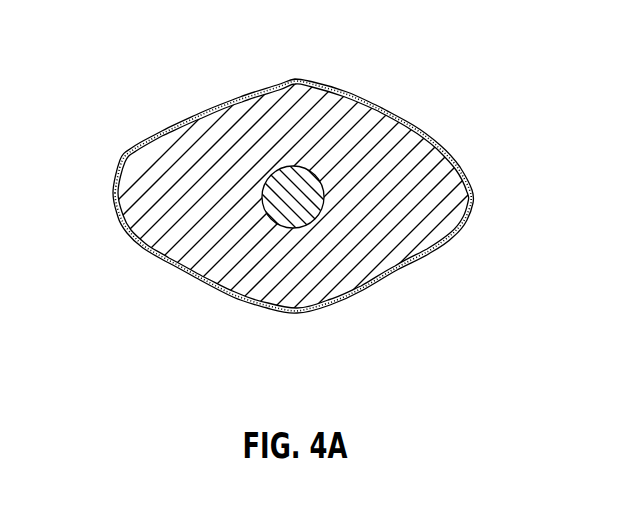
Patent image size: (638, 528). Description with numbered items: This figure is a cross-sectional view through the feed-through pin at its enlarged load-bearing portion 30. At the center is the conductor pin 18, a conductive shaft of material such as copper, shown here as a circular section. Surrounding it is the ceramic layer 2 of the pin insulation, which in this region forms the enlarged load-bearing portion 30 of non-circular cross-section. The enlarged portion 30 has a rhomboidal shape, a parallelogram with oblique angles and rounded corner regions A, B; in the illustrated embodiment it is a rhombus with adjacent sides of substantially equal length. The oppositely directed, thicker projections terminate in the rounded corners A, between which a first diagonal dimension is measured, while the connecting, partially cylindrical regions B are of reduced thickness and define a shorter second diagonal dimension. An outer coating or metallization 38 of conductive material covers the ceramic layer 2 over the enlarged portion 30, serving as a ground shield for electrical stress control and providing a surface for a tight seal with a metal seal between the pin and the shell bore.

The ceramic layer 2 is at (384, 264).
The conductor pin 18 is at (282, 183).
The enlarged load-bearing portion 30 is at (456, 234).
The outer coating or metallization 38 is at (358, 92).
The rounded corner regions A is at (108, 192).
The rounded corner regions / partially cylindrical regions B is at (298, 72).